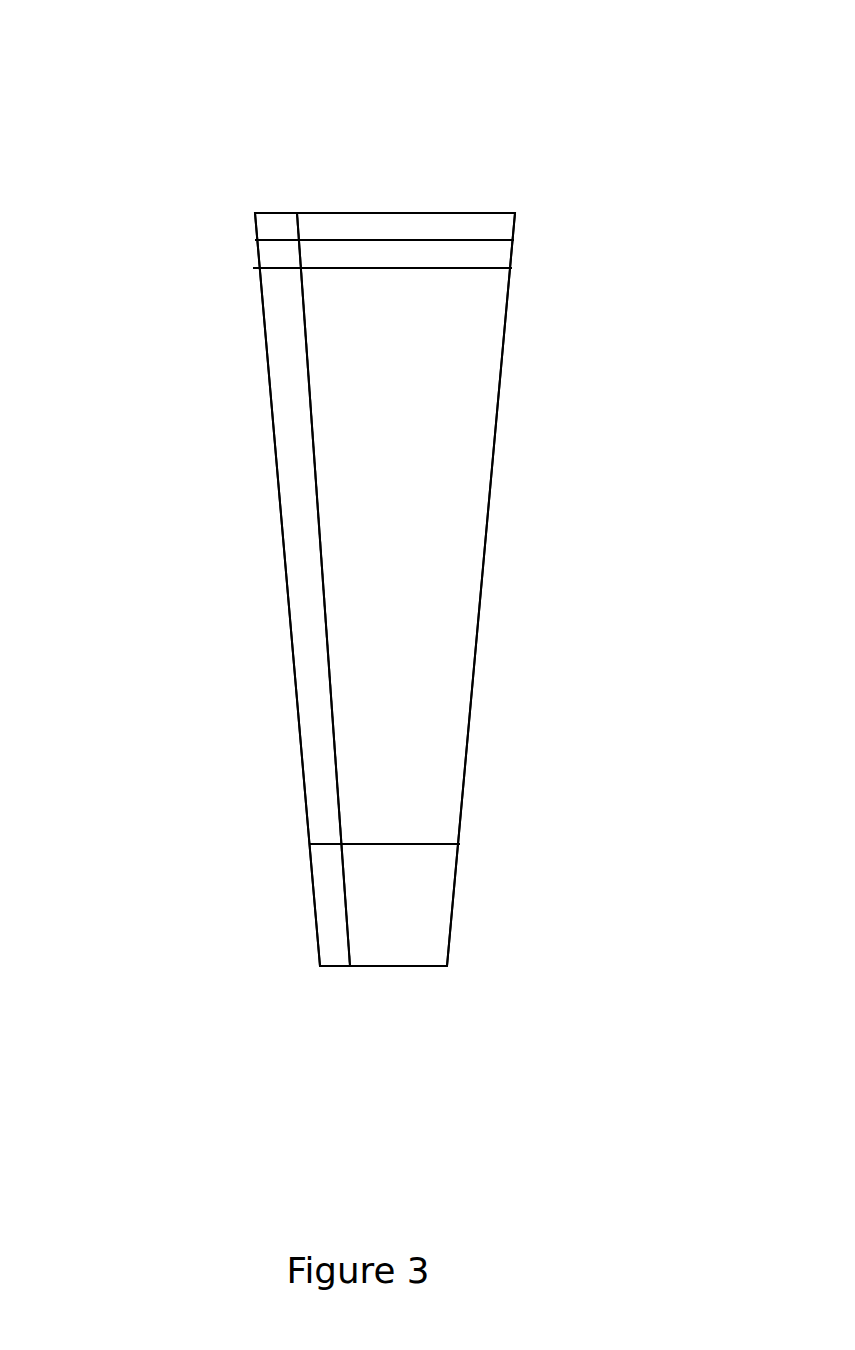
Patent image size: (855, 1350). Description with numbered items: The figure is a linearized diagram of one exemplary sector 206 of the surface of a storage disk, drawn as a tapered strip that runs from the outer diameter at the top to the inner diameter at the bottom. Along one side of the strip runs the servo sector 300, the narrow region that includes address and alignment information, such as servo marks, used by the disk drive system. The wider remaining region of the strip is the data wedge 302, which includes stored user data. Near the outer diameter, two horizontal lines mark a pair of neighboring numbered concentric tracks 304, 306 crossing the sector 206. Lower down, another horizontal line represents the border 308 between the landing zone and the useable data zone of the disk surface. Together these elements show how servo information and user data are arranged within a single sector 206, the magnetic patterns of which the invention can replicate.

The sector 206 is at (173, 130).
The servo sector 300 is at (297, 433).
The data wedge 302 is at (393, 611).
The concentric track 304 is at (517, 227).
The concentric track 306 is at (517, 268).
The border 308 is at (473, 842).